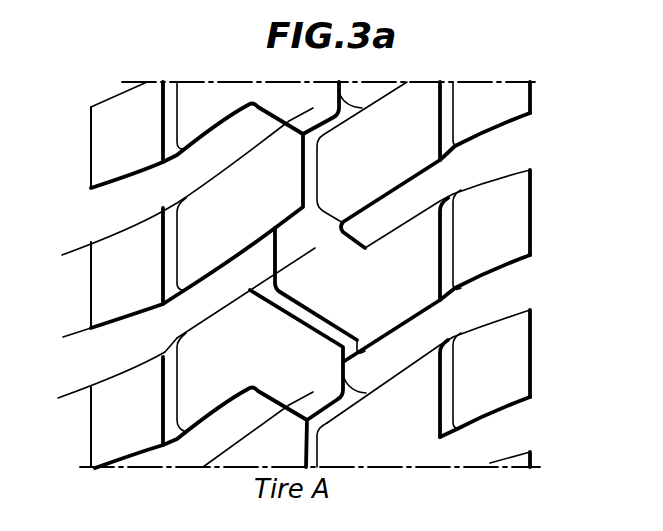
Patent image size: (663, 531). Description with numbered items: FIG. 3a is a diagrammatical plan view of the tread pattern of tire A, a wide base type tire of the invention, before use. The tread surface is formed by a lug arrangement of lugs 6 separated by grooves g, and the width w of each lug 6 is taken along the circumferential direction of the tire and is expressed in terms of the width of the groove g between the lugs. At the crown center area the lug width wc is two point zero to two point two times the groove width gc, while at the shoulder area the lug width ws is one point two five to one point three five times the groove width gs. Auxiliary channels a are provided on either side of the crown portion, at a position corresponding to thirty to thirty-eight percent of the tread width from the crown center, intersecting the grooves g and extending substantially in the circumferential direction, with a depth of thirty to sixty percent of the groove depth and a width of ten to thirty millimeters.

The auxiliary channel a is at (172, 112).
The lug 6 is at (502, 110).
The groove g is at (211, 98).
The width of the lug w is at (212, 181).
The lug width at crown center area wc is at (309, 112).
The groove width at crown center area gc is at (309, 205).
The lug width at shoulder area ws is at (72, 251).
The groove width at shoulder area gs is at (72, 394).